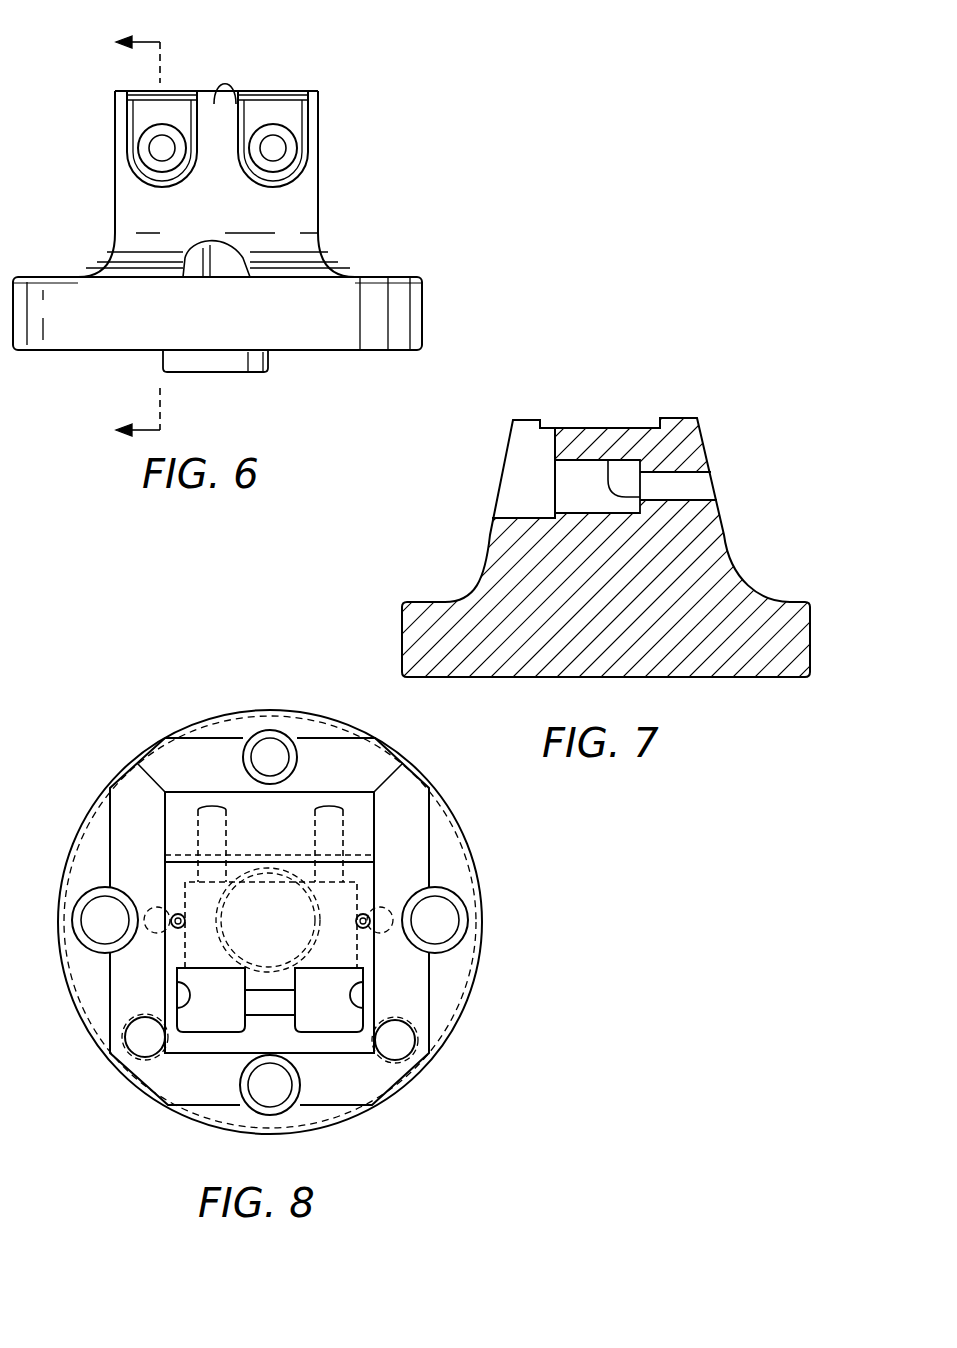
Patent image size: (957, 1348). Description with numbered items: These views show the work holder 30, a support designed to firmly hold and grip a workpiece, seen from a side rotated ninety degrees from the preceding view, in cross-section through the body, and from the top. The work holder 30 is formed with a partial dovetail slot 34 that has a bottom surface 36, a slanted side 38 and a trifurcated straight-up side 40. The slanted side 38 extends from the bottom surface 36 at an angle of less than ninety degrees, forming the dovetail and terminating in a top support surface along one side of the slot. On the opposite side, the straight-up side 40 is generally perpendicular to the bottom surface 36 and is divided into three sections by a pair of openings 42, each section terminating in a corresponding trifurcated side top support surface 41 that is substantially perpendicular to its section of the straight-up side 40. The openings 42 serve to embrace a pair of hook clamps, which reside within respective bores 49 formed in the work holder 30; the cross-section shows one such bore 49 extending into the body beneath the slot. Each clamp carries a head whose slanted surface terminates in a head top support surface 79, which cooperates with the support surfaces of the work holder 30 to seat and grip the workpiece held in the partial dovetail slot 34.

In FIG. 6, the work holder 30 is at (395, 177).
In FIG. 7, the work holder 30 is at (740, 346).
In FIG. 8, the work holder 30 is at (95, 750).
In FIG. 7, the partial dovetail slot 34 is at (622, 428).
In FIG. 7, the bottom surface 36 is at (582, 428).
In FIG. 7, the slanted side 38 is at (662, 420).
In FIG. 7, the trifurcated straight-up side 40 is at (540, 420).
In FIG. 6, the trifurcated side top support surface 41 is at (115, 91).
In FIG. 7, the trifurcated side top support surface 41 is at (527, 420).
In FIG. 6, the openings 42 is at (197, 108).
In FIG. 7, the openings 42 is at (527, 432).
In FIG. 8, the openings 42 is at (177, 995).
In FIG. 7, the bores 49 is at (640, 491).
In FIG. 6, the head top support surface 79 is at (172, 91).